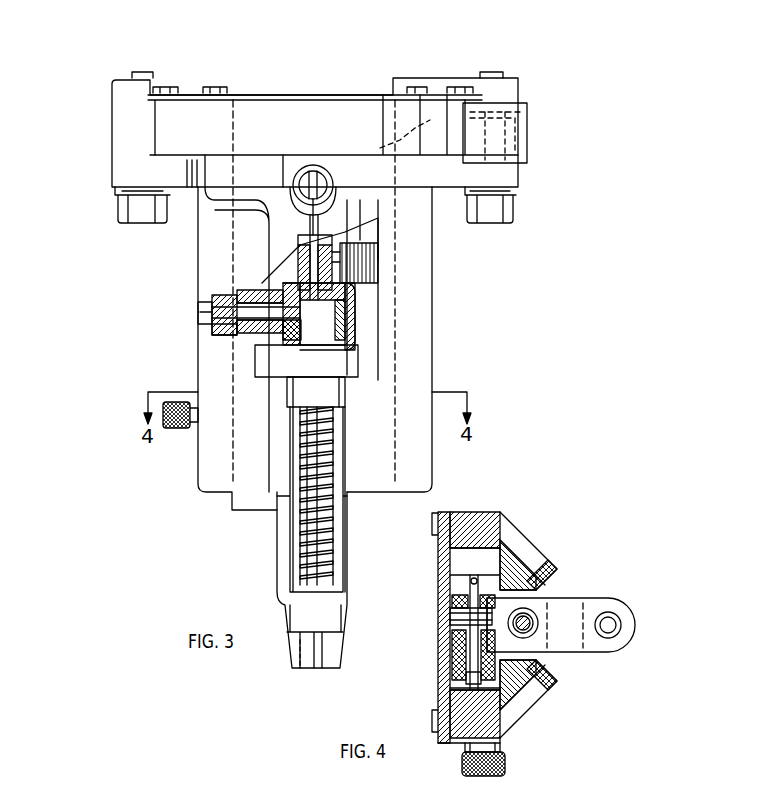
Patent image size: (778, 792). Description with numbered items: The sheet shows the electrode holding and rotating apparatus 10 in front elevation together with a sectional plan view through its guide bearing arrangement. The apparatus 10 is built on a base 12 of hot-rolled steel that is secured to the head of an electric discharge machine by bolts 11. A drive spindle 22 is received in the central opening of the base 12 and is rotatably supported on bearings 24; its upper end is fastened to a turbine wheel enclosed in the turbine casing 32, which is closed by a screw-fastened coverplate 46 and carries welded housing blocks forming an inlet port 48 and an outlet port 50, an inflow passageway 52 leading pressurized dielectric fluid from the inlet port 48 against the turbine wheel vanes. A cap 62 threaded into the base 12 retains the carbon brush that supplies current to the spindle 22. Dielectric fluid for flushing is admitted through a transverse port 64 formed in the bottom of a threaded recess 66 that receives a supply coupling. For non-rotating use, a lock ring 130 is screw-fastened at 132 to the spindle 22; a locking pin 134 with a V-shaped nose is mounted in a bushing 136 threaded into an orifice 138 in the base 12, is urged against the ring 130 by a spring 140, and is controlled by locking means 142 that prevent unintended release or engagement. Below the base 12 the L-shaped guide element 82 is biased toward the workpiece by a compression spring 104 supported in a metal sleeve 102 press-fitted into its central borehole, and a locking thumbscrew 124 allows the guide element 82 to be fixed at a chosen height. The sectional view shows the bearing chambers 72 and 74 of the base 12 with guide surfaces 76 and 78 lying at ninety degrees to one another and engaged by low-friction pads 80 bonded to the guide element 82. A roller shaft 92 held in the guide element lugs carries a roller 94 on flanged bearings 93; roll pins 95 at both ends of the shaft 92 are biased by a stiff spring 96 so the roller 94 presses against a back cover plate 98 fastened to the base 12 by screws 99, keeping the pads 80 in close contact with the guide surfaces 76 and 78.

In FIG. 3, the apparatus 10 is at (103, 80).
In FIG. 3, the bolts 11 is at (124, 213).
In FIG. 3, the base 12 is at (434, 246).
In FIG. 3, the drive spindle 22 is at (345, 396).
In FIG. 3, the bearings 24 is at (260, 348).
In FIG. 3, the turbine casing 32 is at (281, 136).
In FIG. 3, the coverplate 46 is at (264, 97).
In FIG. 3, the inlet port 48 is at (485, 160).
In FIG. 3, the outlet port 50 is at (190, 173).
In FIG. 3, the inflow passageway 52 is at (392, 137).
In FIG. 3, the cap 62 is at (318, 175).
In FIG. 3, the port 64 is at (340, 262).
In FIG. 3, the recess 66 is at (375, 247).
In FIG. 4, the bearing chamber 72 is at (496, 552).
In FIG. 4, the bearing chamber 74 is at (505, 718).
In FIG. 4, the guide surface 76 is at (512, 563).
In FIG. 4, the guide surface 78 is at (530, 690).
In FIG. 4, the low-friction pads 80 is at (545, 578).
In FIG. 3, the guide element 82 is at (355, 535).
In FIG. 4, the guide element 82 is at (512, 558).
In FIG. 4, the roller shaft 92 is at (456, 566).
In FIG. 4, the flanged bearings 93 is at (452, 600).
In FIG. 4, the roller 94 is at (452, 614).
In FIG. 4, the roll pins 95 is at (466, 678).
In FIG. 4, the spring 96 is at (455, 690).
In FIG. 4, the back cover plate 98 is at (466, 585).
In FIG. 4, the screws 99 is at (436, 735).
In FIG. 3, the metal sleeve 102 is at (318, 501).
In FIG. 3, the compression spring 104 is at (333, 448).
In FIG. 3, the locking thumbscrew 124 is at (170, 430).
In FIG. 4, the locking thumbscrew 124 is at (465, 765).
In FIG. 3, the lock ring 130 is at (283, 345).
In FIG. 3, the screw fastening 132 is at (350, 330).
In FIG. 3, the locking pin 134 is at (198, 314).
In FIG. 3, the bushing 136 is at (217, 330).
In FIG. 3, the orifice 138 is at (285, 332).
In FIG. 3, the spring 140 is at (246, 300).
In FIG. 3, the locking means 142 is at (215, 298).